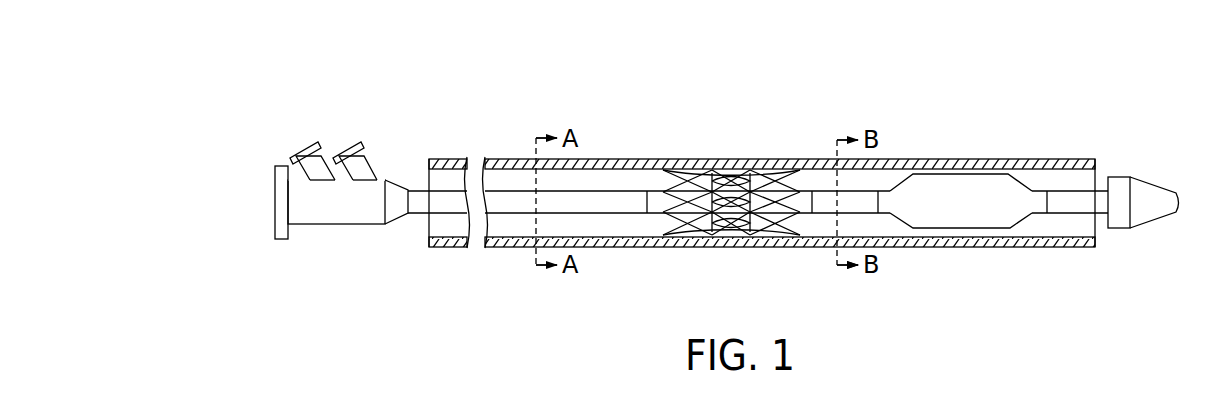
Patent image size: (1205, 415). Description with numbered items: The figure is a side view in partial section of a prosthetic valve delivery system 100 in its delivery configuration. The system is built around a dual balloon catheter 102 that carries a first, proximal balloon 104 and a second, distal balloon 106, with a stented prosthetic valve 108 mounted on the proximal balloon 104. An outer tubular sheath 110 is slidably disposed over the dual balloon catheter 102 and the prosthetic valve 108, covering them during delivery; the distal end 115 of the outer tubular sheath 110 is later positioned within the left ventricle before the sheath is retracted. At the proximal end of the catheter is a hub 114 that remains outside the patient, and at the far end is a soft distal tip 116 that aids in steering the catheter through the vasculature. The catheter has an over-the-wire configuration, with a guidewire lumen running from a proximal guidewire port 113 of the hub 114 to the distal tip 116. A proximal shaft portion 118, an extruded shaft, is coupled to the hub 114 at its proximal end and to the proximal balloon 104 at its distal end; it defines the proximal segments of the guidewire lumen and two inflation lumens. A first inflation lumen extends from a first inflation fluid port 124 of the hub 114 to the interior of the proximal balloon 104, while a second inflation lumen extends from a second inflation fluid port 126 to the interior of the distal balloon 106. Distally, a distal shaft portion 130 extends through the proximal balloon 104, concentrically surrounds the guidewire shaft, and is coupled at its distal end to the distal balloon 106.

The prosthetic valve delivery system 100 is at (821, 61).
The dual balloon catheter 102 is at (637, 217).
The proximal balloon 104 is at (805, 208).
The distal balloon 106 is at (995, 190).
The stented prosthetic valve 108 is at (740, 167).
The outer tubular sheath 110 is at (519, 247).
The proximal guidewire port 113 is at (275, 203).
The hub 114 is at (339, 227).
The distal end of outer tubular sheath 115 is at (1095, 248).
The soft distal tip 116 is at (1137, 178).
The proximal shaft portion 118 is at (577, 188).
The first inflation fluid port 124 is at (306, 147).
The second inflation fluid port 126 is at (350, 144).
The distal shaft portion 130 is at (873, 190).